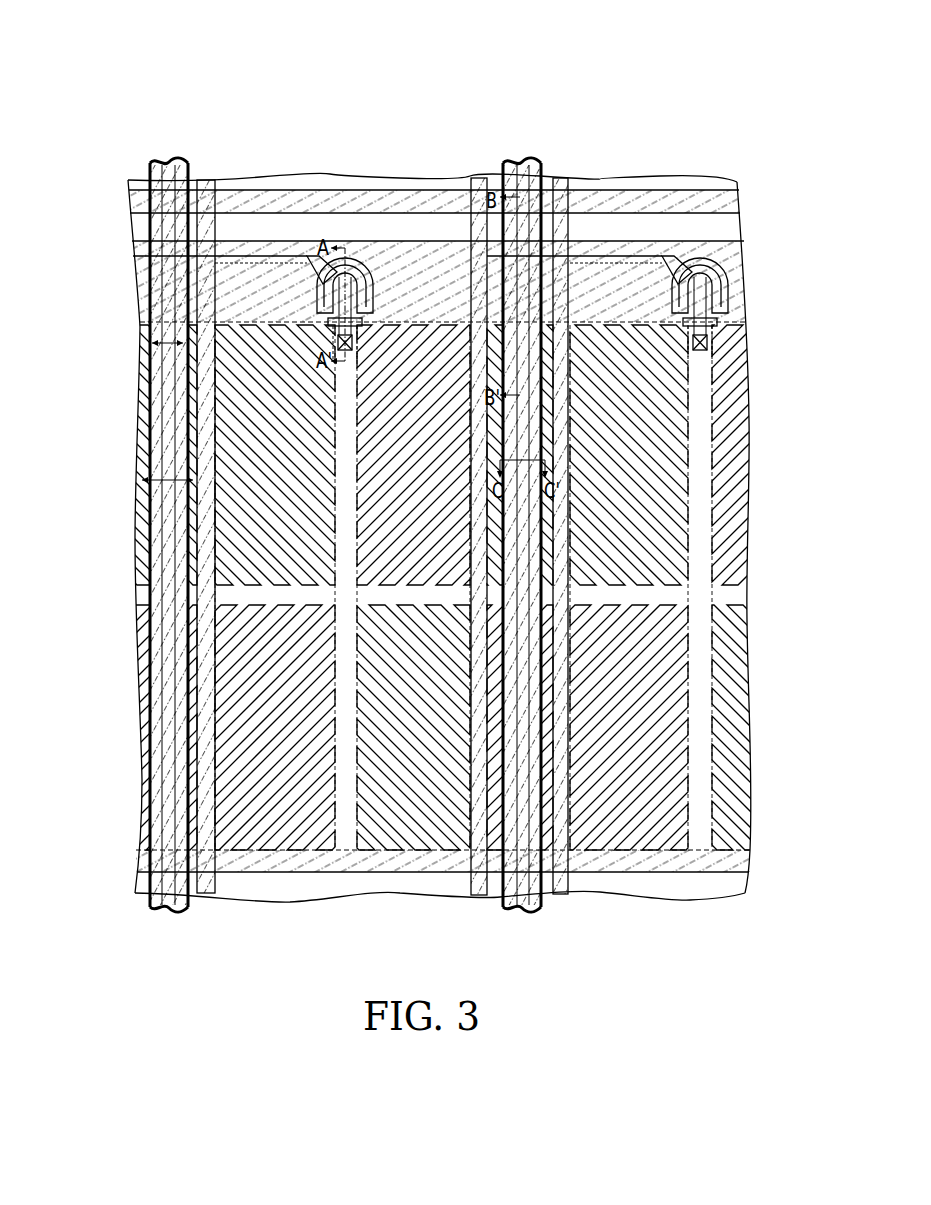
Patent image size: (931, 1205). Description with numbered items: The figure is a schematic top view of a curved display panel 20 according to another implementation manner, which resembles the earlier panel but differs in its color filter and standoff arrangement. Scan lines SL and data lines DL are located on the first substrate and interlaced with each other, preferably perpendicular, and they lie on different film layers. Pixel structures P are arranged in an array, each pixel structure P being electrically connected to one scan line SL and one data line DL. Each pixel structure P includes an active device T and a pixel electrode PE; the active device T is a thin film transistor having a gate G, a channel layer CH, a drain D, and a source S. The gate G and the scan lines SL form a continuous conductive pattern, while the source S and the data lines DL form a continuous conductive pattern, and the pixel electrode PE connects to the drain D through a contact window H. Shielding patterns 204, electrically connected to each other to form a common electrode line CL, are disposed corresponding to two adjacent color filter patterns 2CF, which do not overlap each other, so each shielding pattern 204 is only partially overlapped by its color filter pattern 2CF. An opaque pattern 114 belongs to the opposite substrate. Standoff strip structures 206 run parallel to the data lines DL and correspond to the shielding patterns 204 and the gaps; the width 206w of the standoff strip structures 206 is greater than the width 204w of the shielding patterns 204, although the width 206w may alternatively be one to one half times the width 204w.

The curved display panel 20 is at (747, 964).
The color filter patterns 2CF is at (130, 186).
The common electrode line CL is at (129, 197).
The opaque pattern 114 is at (134, 235).
The scan lines SL is at (137, 283).
The data lines DL is at (206, 180).
The shielding patterns 204 is at (158, 159).
The width of the shielding patterns 204w is at (146, 483).
The standoff strip structures 206 is at (146, 342).
The width of the standoff strip structures 206w is at (148, 362).
The contact window H is at (338, 344).
The pixel structure P is at (415, 38).
The active device T is at (377, 76).
The gate G is at (305, 282).
The source S is at (337, 262).
The channel layer CH is at (350, 272).
The drain D is at (372, 280).
The pixel electrode PE is at (390, 362).